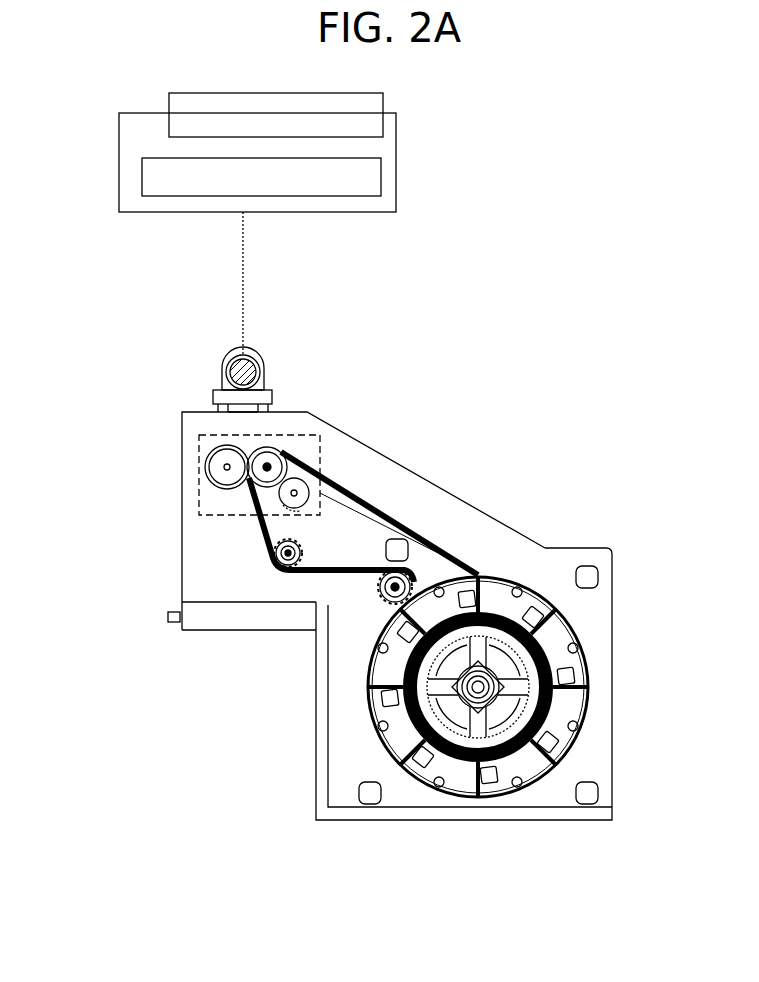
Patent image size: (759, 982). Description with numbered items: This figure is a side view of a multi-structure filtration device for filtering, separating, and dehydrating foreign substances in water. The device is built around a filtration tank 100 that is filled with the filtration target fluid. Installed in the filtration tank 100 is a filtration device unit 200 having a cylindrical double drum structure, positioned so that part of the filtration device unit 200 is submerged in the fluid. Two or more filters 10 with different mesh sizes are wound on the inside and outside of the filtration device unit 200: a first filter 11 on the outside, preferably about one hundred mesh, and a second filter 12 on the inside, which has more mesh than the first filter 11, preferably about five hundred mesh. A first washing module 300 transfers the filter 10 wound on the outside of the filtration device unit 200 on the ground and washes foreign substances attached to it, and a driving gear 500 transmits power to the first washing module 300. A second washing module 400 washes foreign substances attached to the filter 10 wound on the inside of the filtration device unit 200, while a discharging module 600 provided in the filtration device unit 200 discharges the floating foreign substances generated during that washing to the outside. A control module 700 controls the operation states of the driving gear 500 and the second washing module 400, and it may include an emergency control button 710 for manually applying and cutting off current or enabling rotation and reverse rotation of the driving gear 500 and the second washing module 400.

The control module 700 is at (169, 99).
The emergency control button 710 is at (142, 176).
The driving gear 500 is at (262, 372).
The filtration tank 100 is at (172, 385).
The first washing module 300 is at (199, 470).
The filtration device unit 200 is at (548, 545).
The second washing module 400 is at (548, 628).
The filters 10 is at (426, 747).
The first filter 11 is at (445, 638).
The second filter 12 is at (420, 698).
The discharging module 600 is at (493, 797).